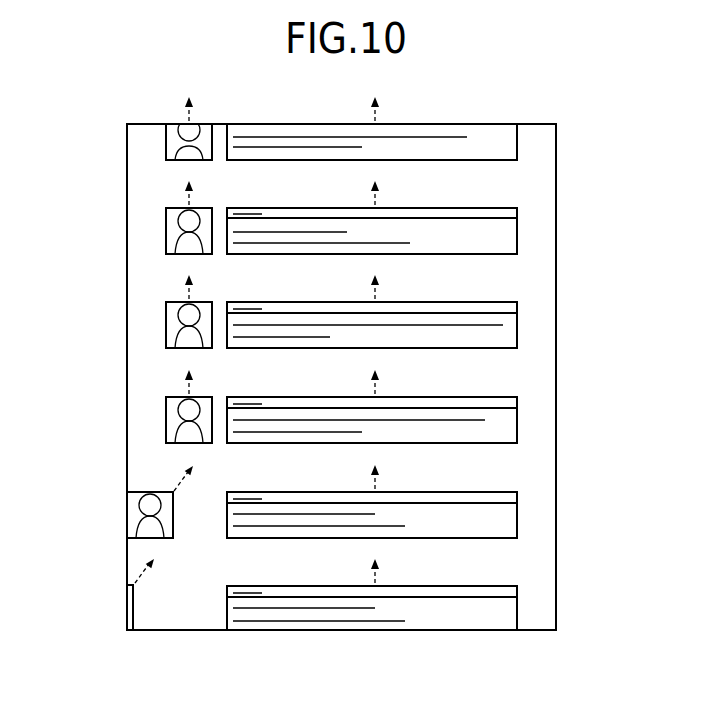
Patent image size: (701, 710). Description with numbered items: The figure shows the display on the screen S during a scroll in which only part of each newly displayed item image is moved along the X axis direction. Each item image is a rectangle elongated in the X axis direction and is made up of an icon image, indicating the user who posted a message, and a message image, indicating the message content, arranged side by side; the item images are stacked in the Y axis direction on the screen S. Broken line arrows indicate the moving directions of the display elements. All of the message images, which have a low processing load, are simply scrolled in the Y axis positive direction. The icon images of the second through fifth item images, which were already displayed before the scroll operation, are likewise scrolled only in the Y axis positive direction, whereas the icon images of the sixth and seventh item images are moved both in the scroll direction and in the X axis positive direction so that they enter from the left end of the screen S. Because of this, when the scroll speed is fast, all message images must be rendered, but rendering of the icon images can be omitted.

The screen S is at (192, 630).